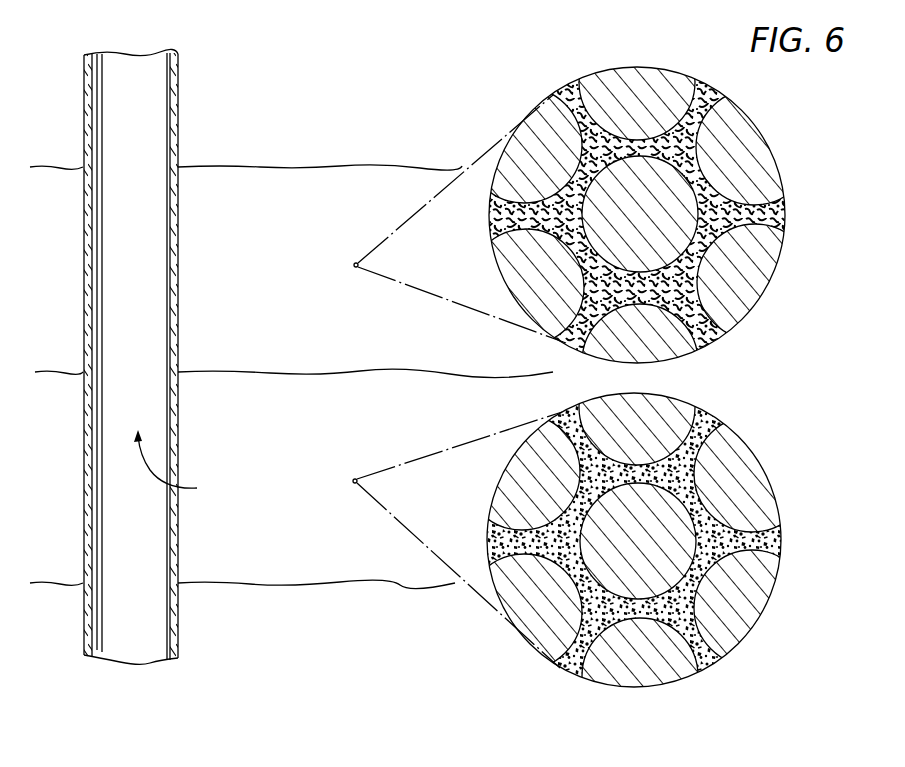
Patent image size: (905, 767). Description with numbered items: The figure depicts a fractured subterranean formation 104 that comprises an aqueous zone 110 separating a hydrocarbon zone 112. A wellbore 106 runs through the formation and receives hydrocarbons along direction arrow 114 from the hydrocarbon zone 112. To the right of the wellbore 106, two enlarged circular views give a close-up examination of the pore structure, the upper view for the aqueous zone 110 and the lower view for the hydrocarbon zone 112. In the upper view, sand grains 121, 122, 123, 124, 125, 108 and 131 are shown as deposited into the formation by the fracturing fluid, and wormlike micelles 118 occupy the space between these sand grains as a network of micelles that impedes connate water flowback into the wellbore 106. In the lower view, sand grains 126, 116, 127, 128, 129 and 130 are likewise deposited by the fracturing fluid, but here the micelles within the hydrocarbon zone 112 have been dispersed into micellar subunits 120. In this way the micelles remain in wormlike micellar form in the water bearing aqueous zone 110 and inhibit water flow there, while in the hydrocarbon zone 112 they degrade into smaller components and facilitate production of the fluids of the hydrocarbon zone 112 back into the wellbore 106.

The fractured subterranean formation 104 is at (393, 88).
The wellbore 106 is at (150, 110).
The sand grain 108 is at (748, 157).
The aqueous zone 110 is at (288, 198).
The hydrocarbon zone 112 is at (282, 560).
The direction arrow 114 is at (145, 475).
The sand grain 116 is at (667, 528).
The wormlike micelles 118 is at (703, 280).
The micellar subunits 120 is at (782, 543).
The sand grain 121 is at (638, 85).
The sand grain 122 is at (727, 310).
The sand grain 123 is at (670, 345).
The sand grain 124 is at (537, 287).
The sand grain 125 is at (537, 127).
The sand grain 126 is at (663, 426).
The sand grain 127 is at (750, 593).
The sand grain 128 is at (648, 673).
The sand grain 129 is at (533, 607).
The sand grain 130 is at (510, 498).
The sand grain 131 is at (670, 217).